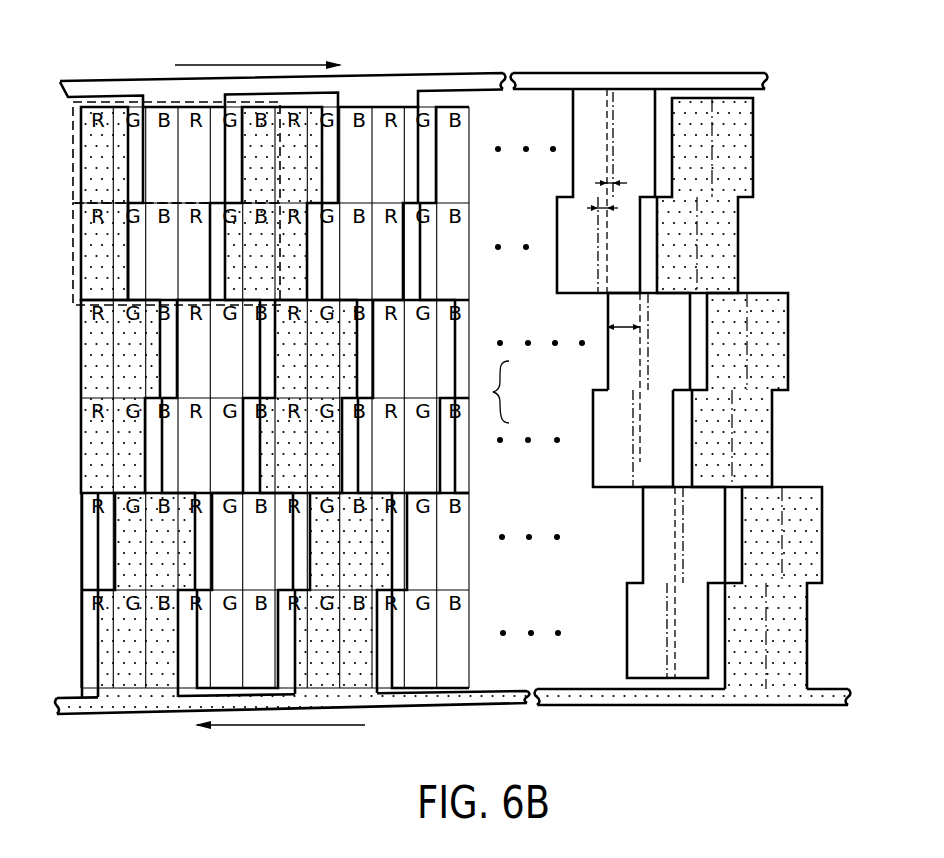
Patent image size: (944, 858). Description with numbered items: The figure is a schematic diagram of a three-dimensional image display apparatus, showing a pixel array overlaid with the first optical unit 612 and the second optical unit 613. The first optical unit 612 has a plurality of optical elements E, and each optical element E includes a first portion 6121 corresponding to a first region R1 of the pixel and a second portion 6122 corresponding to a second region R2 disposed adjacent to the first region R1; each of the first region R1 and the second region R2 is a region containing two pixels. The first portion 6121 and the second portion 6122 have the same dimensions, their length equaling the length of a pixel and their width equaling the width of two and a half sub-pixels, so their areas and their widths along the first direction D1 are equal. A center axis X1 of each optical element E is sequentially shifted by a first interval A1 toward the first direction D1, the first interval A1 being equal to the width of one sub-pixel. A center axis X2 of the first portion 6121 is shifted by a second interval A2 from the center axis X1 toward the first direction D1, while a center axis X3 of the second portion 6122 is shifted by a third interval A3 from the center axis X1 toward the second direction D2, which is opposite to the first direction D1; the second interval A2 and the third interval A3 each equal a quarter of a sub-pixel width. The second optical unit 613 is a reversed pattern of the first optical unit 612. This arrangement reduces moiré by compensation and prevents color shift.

The first optical unit 612 is at (635, 108).
The first portion 6121 is at (607, 363).
The second portion 6122 is at (592, 430).
The second optical unit 613 is at (752, 706).
The first region R1 is at (73, 167).
The second region R2 is at (73, 273).
The center axis of the optical element X1 is at (603, 96).
The center axis of the first portion X2 is at (615, 107).
The center axis of the second portion X3 is at (598, 274).
The first interval A1 is at (623, 323).
The second interval A2 is at (612, 182).
The third interval A3 is at (603, 210).
The first direction D1 is at (258, 49).
The second direction D2 is at (280, 741).
The optical element E is at (493, 392).